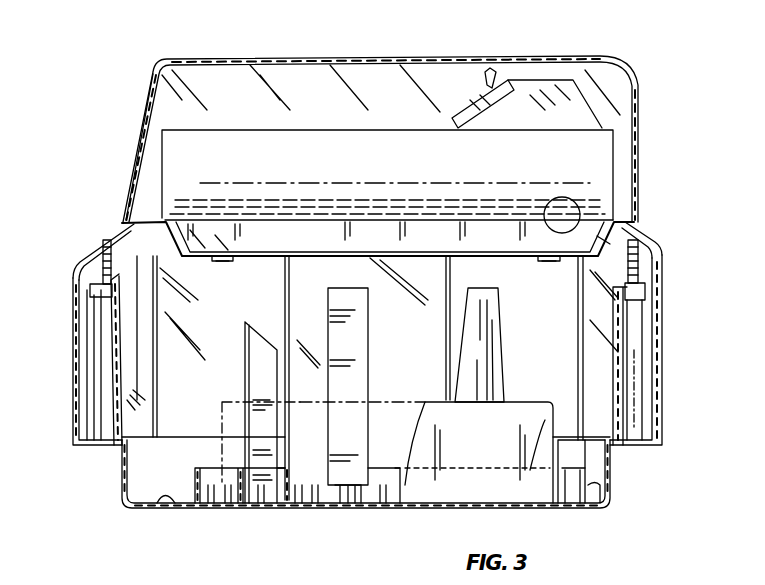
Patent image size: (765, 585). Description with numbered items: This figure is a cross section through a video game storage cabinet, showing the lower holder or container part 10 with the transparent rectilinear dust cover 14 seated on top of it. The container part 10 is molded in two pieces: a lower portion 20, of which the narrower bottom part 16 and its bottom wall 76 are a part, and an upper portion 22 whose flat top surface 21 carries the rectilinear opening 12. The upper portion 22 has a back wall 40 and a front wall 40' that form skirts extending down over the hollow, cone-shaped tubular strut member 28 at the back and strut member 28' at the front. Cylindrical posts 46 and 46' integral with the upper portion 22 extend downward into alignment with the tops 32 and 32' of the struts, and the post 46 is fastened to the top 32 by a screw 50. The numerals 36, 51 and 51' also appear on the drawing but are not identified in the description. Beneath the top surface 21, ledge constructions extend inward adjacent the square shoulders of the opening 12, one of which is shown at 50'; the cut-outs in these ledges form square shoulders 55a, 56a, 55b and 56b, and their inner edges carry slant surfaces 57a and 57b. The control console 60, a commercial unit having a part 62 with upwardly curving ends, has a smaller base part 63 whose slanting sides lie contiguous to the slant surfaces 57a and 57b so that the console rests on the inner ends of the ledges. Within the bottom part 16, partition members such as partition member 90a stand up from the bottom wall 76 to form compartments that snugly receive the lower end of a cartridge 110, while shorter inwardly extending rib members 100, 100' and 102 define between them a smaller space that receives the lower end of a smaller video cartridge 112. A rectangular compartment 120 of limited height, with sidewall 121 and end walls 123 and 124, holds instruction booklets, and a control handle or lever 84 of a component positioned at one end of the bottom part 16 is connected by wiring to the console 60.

The container part 10 is at (116, 454).
The rectilinear opening 12 is at (188, 214).
The transparent rectilinear dust cover 14 is at (574, 60).
The bottom part 16 is at (598, 456).
The lower portion 20 is at (120, 352).
The top surface 21 is at (132, 200).
The upper portion 22 is at (76, 330).
The strut member 28 is at (585, 348).
The strut member 28' is at (150, 391).
The top of strut member 32 is at (652, 342).
The top of strut member 32' is at (148, 269).
The central chamber 36 is at (417, 353).
The back wall 40 is at (654, 350).
The front wall 40' is at (77, 359).
The cylindrical post 46 is at (655, 237).
The cylindrical post 46' is at (99, 247).
The screw 50 is at (572, 204).
The square shoulder 50' is at (243, 204).
The nut 51 is at (658, 300).
The nut 51' is at (121, 304).
The square shoulder 55a is at (545, 262).
The square shoulder 55b is at (240, 252).
The square shoulder 56a is at (560, 263).
The square shoulder 56b is at (222, 263).
The slant surface 57a is at (612, 222).
The slant surface 57b is at (228, 250).
The control console 60 is at (425, 130).
The console part 62 is at (495, 181).
The base part 63 is at (425, 250).
The bottom wall 76 is at (165, 508).
The control handle or lever 84 is at (485, 300).
The partition member 90a is at (586, 506).
The rib member 100 is at (338, 510).
The rib member 100' is at (262, 516).
The rib member 102 is at (346, 508).
The cartridge 110 is at (348, 280).
The video cartridge 112 is at (255, 335).
The rectangular compartment 120 is at (478, 433).
The sidewall 121 is at (538, 405).
The end wall 123 is at (222, 448).
The end wall 124 is at (522, 480).